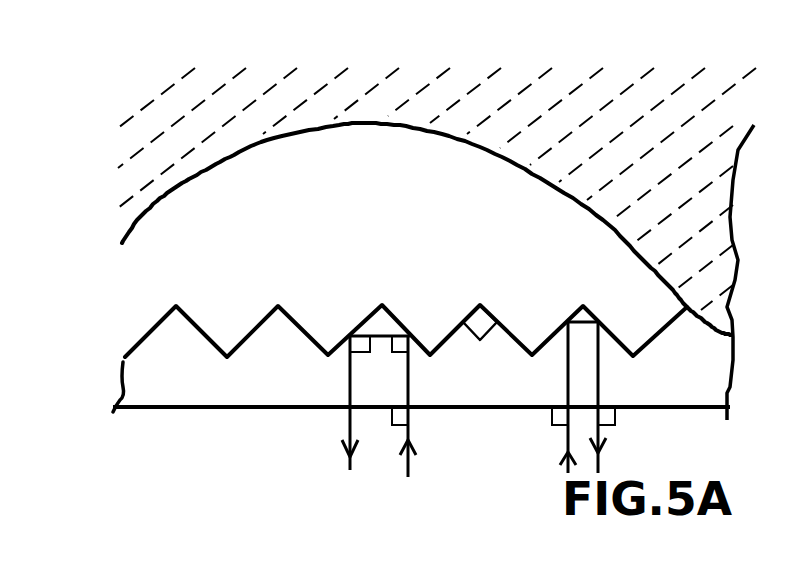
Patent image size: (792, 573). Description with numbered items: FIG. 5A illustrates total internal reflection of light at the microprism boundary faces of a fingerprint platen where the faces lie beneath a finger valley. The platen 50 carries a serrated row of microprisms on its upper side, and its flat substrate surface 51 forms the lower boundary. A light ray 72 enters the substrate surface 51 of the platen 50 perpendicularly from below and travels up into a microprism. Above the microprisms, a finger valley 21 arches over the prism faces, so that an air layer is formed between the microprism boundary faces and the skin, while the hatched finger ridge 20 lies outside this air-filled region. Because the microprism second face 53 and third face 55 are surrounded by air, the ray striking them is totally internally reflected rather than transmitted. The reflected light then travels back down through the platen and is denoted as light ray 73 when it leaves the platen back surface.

The finger ridge 20 is at (613, 172).
The finger valley 21 is at (261, 217).
The platen 50 is at (289, 386).
The substrate surface 51 is at (252, 415).
The microprism second face 53 is at (402, 323).
The microprism third face 55 is at (355, 332).
The light ray 72 is at (410, 462).
The light ray 73 is at (347, 422).